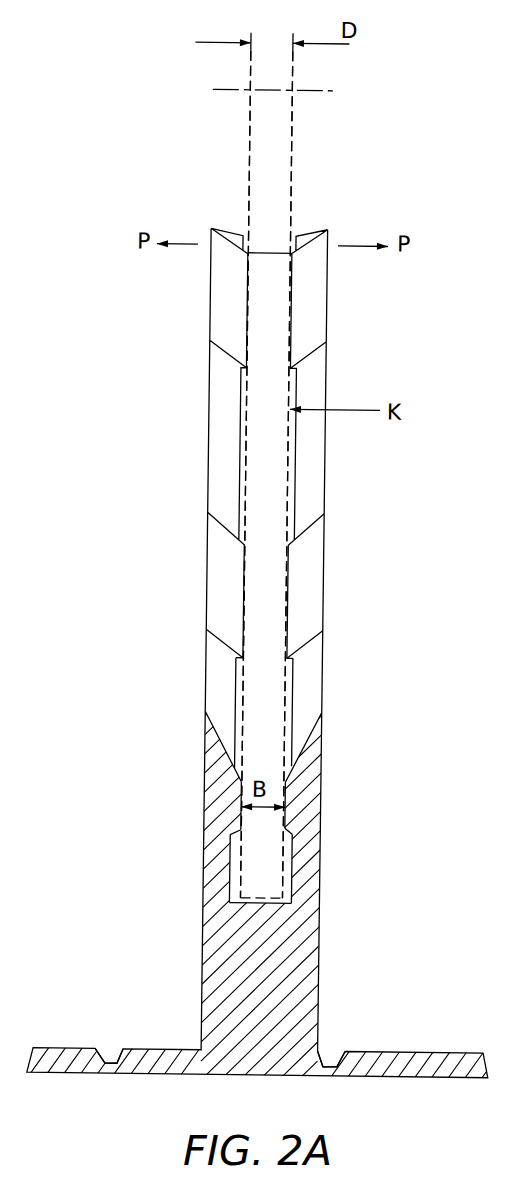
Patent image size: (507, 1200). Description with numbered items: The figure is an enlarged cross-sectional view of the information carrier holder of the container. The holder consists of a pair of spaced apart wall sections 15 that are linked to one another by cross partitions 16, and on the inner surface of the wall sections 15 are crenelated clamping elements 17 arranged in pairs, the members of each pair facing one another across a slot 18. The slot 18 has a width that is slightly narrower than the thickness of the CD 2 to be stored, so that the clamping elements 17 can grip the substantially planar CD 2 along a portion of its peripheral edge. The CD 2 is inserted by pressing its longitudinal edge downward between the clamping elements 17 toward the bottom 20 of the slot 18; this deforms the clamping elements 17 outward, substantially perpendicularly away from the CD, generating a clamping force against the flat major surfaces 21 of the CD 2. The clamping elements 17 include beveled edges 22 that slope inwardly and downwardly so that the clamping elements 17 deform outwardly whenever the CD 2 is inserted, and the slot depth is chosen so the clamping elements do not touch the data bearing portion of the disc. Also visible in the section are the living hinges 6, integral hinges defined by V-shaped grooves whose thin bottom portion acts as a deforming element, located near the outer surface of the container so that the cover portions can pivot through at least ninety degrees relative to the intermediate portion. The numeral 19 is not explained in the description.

The CD 2 is at (272, 140).
The flat major surfaces 21 is at (237, 170).
The crenelated clamping elements 17 is at (306, 595).
The wall sections 15 is at (220, 667).
The beveled edges 22 is at (205, 715).
The cross partitions 16 is at (236, 952).
The slot 18 is at (274, 860).
The shoulder 19 is at (294, 846).
The bottom 20 is at (269, 900).
The living hinges 6 is at (114, 1046).